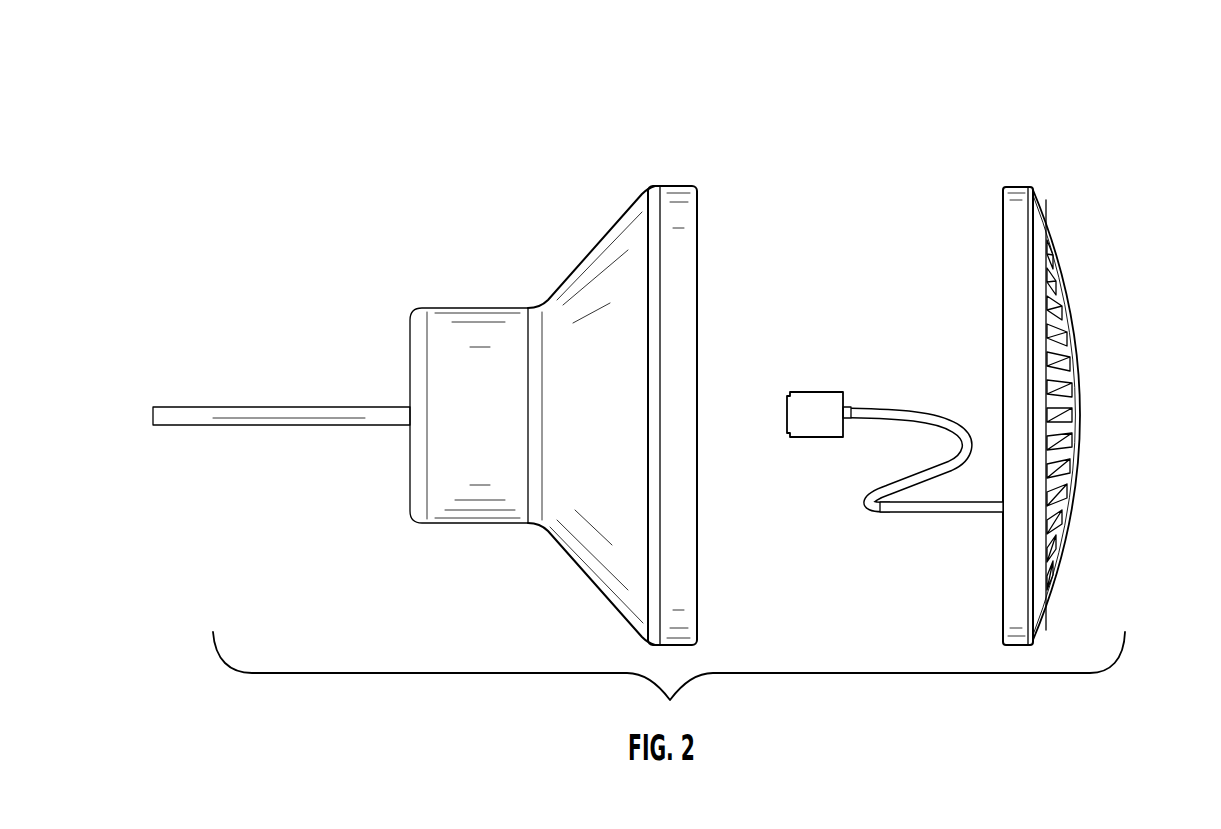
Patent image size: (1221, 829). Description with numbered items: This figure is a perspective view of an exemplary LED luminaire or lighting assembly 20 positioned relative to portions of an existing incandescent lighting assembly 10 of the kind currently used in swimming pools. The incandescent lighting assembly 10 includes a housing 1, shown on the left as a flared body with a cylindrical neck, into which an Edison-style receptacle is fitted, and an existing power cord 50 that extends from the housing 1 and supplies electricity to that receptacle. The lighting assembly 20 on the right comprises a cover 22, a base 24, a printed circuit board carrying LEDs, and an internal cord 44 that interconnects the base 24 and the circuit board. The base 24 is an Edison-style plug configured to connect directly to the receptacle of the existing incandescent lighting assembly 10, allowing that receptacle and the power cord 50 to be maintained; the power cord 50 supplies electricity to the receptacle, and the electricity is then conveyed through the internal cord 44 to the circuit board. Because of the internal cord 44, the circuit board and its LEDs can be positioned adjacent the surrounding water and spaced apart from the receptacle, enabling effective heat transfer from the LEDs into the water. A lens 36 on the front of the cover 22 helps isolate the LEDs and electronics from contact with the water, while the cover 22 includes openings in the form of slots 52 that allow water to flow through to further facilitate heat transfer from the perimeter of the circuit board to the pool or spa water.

The incandescent lighting assembly 10 is at (566, 351).
The housing 1 is at (572, 268).
The power cord 50 is at (275, 405).
The lighting assembly 20 is at (983, 355).
The cover 22 is at (1018, 220).
The base 24 is at (812, 392).
The internal cord 44 is at (925, 514).
The lens 36 is at (1083, 409).
The slots 52 is at (1065, 337).